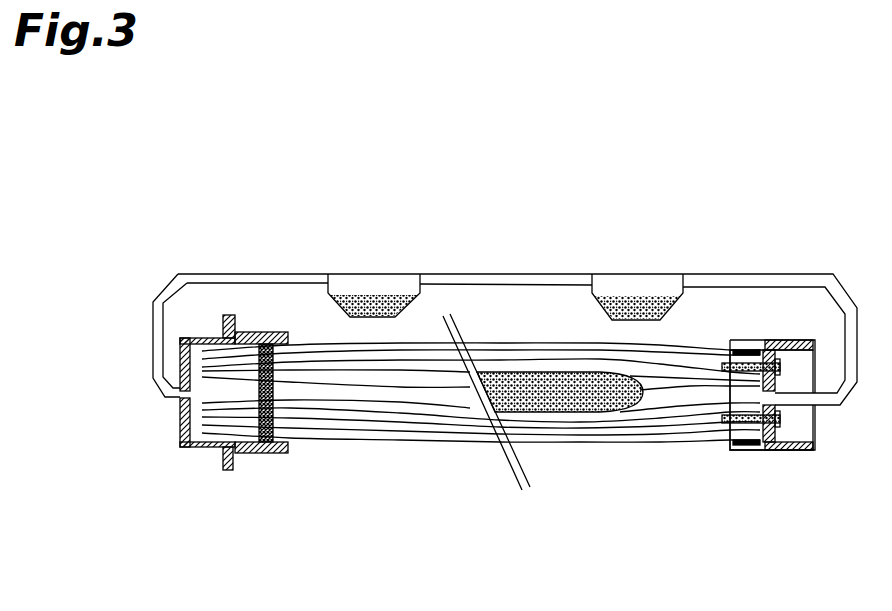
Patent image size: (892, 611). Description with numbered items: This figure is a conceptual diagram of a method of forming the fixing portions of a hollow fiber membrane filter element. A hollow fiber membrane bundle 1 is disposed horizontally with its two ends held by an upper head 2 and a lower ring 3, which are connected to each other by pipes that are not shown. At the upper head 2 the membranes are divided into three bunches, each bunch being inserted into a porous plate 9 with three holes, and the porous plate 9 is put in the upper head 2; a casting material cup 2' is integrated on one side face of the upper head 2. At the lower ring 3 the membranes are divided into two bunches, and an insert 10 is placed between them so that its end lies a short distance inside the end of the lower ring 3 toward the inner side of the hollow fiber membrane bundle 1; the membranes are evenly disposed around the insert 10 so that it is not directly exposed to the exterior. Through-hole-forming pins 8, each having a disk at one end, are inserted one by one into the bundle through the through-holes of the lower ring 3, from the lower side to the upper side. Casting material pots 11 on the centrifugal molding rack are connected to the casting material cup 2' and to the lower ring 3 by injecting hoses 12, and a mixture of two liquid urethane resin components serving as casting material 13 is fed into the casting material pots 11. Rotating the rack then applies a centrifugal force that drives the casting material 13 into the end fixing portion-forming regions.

The hollow fiber membrane bundle 1 is at (415, 425).
The upper head 2 is at (270, 505).
The casting material cup 2' is at (246, 265).
The lower ring 3 is at (782, 452).
The through-hole-forming pins 8 is at (740, 422).
The porous plate 9 is at (265, 345).
The insert 10 is at (545, 413).
The casting material pots 11 is at (653, 277).
The injecting hoses 12 is at (723, 276).
The casting material 13 is at (627, 300).